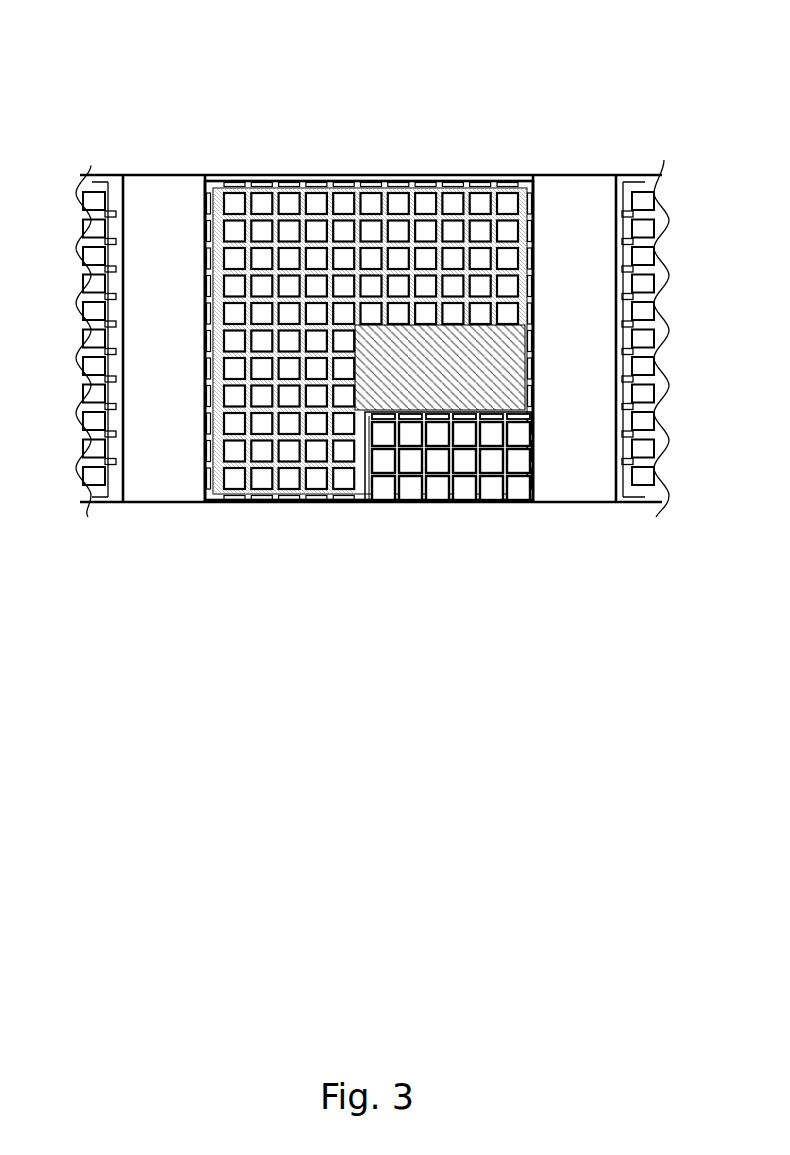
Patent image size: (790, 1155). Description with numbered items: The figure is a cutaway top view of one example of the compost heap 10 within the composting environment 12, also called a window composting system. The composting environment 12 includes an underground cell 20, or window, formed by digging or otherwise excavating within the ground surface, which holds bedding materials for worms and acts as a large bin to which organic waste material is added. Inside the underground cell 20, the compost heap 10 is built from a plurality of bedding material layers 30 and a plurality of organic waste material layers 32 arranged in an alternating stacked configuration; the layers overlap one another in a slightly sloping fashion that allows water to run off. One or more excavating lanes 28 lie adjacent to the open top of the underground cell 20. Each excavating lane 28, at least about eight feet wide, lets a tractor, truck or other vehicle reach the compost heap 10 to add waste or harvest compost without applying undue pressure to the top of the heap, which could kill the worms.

The compost heap 10 is at (223, 173).
The composting environment 12 is at (622, 81).
The underground cell 20 is at (119, 500).
The excavating lane 28 is at (163, 503).
The bedding material layers 30 is at (440, 182).
The organic waste material layers 32 is at (503, 380).